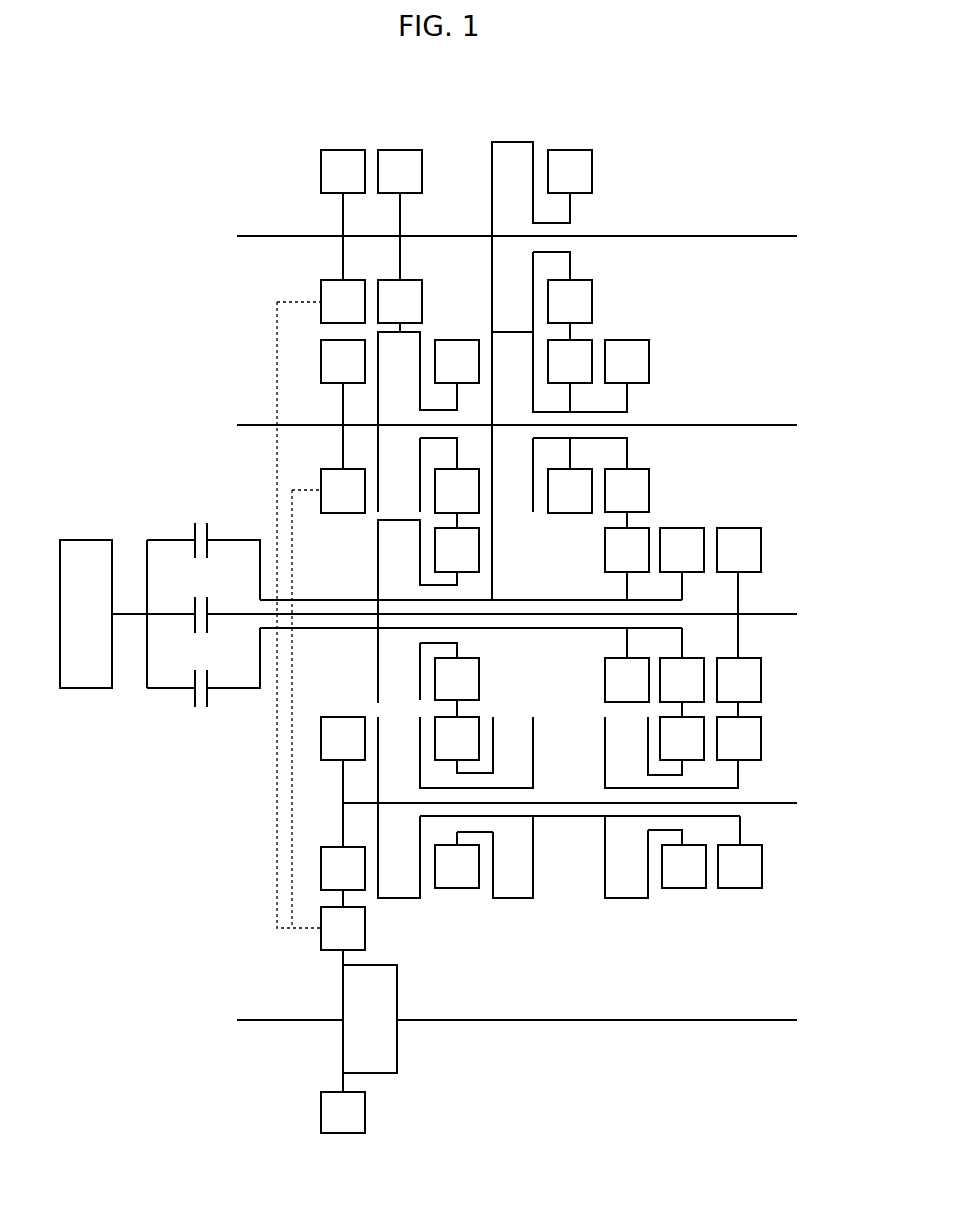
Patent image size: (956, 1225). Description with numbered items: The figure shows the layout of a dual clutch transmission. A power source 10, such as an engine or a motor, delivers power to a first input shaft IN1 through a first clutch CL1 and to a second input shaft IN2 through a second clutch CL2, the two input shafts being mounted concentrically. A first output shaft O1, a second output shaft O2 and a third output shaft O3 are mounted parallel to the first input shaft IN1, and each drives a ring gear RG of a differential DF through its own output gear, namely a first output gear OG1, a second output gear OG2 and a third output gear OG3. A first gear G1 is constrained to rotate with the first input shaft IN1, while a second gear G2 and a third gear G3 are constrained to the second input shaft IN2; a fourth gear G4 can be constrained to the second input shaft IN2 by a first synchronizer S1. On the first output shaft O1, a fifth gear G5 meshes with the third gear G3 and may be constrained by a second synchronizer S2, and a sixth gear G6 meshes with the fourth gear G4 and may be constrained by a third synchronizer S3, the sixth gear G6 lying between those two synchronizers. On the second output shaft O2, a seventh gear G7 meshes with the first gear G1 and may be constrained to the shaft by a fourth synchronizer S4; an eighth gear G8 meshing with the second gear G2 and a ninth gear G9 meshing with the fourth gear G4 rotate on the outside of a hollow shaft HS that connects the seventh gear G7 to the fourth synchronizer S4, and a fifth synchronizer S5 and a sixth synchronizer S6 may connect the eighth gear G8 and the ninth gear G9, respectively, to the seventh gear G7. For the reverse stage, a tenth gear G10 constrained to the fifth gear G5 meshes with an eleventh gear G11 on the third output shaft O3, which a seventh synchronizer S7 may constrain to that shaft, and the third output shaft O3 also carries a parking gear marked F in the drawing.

The power source 10 is at (87, 540).
The first clutch CL1 is at (197, 590).
The second clutch CL2 is at (200, 523).
The third output gear OG3 is at (343, 150).
The floating diffusion F is at (400, 150).
The seventh synchronizer S7 is at (512, 142).
The eleventh gear G11 is at (570, 150).
The third output shaft O3 is at (262, 236).
The first output gear OG1 is at (321, 360).
The first output shaft O1 is at (237, 425).
The second synchronizer S2 is at (512, 332).
The third synchronizer S3 is at (400, 332).
The sixth gear G6 is at (457, 340).
The fifth gear G5 is at (648, 360).
The first synchronizer S1 is at (400, 520).
The fourth gear G4 is at (478, 552).
The tenth gear G10 is at (570, 513).
The third gear G3 is at (648, 528).
The second gear G2 is at (695, 528).
The first gear G1 is at (740, 528).
The first input shaft IN1 is at (778, 614).
The second input shaft IN2 is at (690, 628).
The second output shaft O2 is at (783, 803).
The hollow shaft HS is at (562, 816).
The fourth synchronizer S4 is at (400, 898).
The ninth gear G9 is at (457, 888).
The sixth synchronizer S6 is at (513, 898).
The fifth synchronizer S5 is at (627, 898).
The eighth gear G8 is at (682, 888).
The seventh gear G7 is at (740, 888).
The second output gear OG2 is at (333, 717).
The differential DF is at (397, 1050).
The ring gear RG is at (365, 1112).